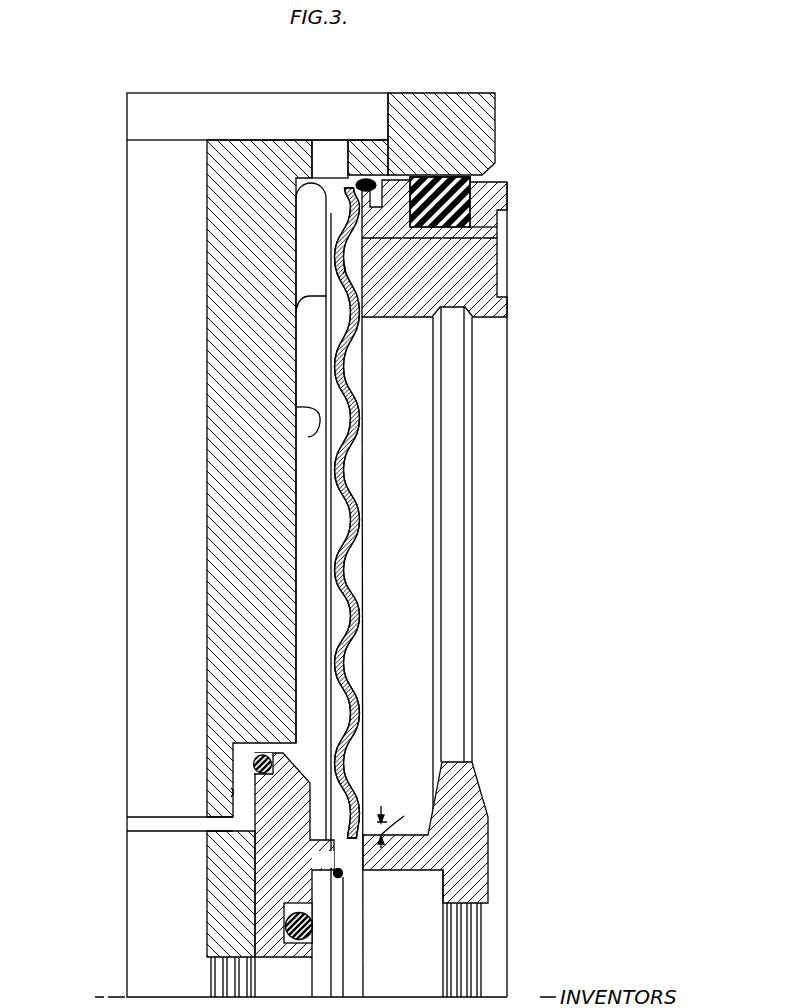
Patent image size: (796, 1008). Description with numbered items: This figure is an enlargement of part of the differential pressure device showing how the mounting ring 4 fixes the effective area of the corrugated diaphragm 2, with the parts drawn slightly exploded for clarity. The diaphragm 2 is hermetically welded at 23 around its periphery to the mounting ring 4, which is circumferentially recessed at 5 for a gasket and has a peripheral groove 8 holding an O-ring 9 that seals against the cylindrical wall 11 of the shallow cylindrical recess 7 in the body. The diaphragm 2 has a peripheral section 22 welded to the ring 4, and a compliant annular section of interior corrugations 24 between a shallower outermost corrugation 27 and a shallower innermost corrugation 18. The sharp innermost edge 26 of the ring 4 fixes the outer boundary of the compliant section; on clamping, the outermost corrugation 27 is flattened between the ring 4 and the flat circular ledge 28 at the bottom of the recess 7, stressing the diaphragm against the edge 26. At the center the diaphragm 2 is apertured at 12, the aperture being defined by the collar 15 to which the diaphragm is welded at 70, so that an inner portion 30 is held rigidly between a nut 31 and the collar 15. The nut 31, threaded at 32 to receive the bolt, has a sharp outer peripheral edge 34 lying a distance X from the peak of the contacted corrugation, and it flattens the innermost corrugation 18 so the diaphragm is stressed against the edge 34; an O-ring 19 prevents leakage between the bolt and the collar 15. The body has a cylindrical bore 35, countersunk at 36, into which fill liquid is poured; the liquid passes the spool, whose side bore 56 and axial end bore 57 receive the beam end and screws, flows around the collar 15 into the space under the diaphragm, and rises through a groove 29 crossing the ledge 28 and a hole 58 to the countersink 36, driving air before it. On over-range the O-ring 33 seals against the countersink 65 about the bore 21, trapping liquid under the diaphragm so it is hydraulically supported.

The countersink 36 is at (247, 126).
The hole 58 is at (343, 168).
The cylindrical wall 11 is at (366, 184).
The weld 23 is at (357, 185).
The peripheral section 22 is at (341, 218).
The groove 29 is at (323, 257).
The outermost corrugation 27 is at (343, 268).
The ledge 28 is at (310, 299).
The innermost edge 26 is at (363, 318).
The interior corrugations 24 is at (338, 369).
The recess 7 is at (297, 407).
The diaphragm 2 is at (351, 490).
The cylindrical bore 35 is at (203, 340).
The peripheral groove 8 is at (493, 218).
The O-ring 9 is at (436, 228).
The circumferential recess 5 is at (497, 283).
The mounting ring 4 is at (505, 313).
The O-ring 33 is at (258, 760).
The countersink 65 is at (236, 796).
The collar 15 is at (262, 812).
The bore 21 is at (145, 828).
The inner portion 30 is at (348, 828).
The sharp outer peripheral edge 34 is at (367, 828).
The innermost corrugation 18 is at (345, 861).
The central aperture 12 is at (339, 889).
The weld 70 is at (332, 878).
The O-ring 19 is at (315, 930).
The nut 31 is at (490, 847).
The threads 32 is at (465, 928).
The side bore 56 is at (151, 933).
The axial end bore 57 is at (205, 996).